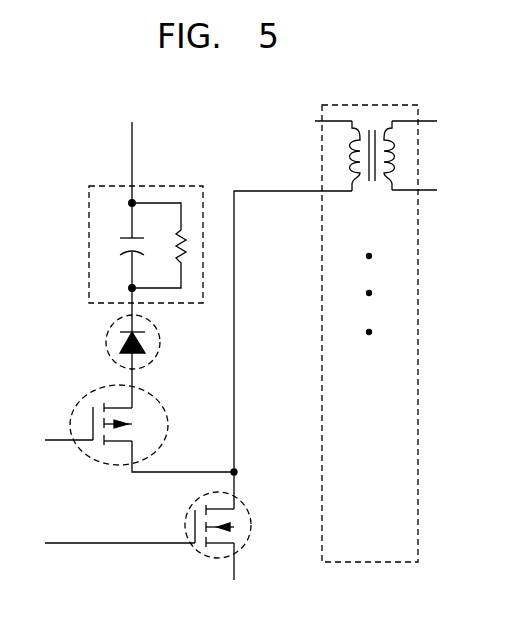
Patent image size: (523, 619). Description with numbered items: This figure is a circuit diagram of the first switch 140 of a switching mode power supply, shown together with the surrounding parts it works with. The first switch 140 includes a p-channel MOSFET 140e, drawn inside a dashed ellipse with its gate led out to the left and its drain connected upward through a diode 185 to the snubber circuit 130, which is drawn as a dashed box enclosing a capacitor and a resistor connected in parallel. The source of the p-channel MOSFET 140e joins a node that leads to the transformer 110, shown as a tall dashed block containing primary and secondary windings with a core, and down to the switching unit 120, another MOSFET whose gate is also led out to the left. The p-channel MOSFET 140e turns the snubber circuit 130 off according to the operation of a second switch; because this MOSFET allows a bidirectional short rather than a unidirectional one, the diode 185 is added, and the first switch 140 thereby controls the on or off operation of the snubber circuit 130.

The transformer 110 is at (419, 277).
The switching unit 120 is at (247, 507).
The snubber circuit 130 is at (160, 183).
The first switch 140 is at (400, 92).
The p-channel MOSFET 140e is at (93, 457).
The diode 185 is at (107, 343).